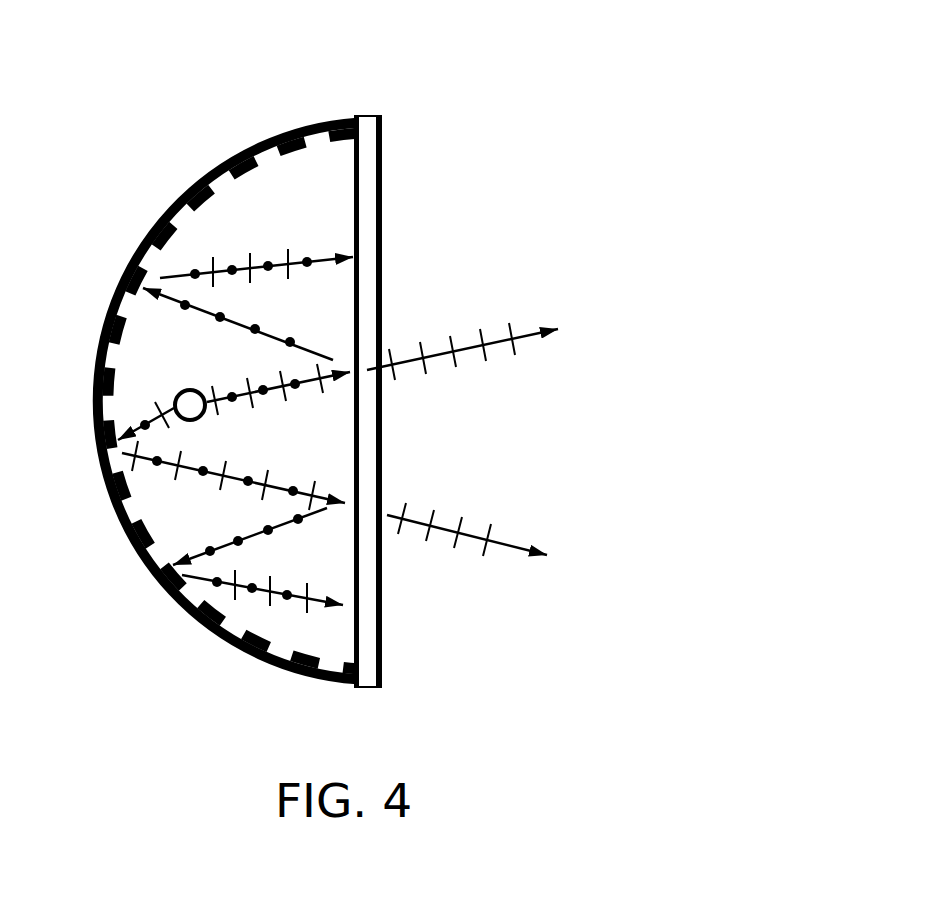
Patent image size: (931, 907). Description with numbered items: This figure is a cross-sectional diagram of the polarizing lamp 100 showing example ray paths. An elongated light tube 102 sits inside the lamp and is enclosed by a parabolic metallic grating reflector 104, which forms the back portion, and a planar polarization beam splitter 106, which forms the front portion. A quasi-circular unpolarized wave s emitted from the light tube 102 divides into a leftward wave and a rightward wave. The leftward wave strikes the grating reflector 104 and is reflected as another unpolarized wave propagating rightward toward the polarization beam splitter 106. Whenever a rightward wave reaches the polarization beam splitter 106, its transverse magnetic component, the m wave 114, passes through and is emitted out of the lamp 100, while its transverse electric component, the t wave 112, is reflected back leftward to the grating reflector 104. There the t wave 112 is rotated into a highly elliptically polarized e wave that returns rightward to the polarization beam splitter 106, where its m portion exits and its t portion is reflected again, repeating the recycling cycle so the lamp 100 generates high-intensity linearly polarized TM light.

The polarizing lamp 100 is at (633, 52).
The light tube 102 is at (208, 413).
The metallic grating reflector 104 is at (196, 178).
The polarization beam splitter 106 is at (381, 217).
The t wave 112 is at (296, 343).
The m wave 114 is at (511, 331).